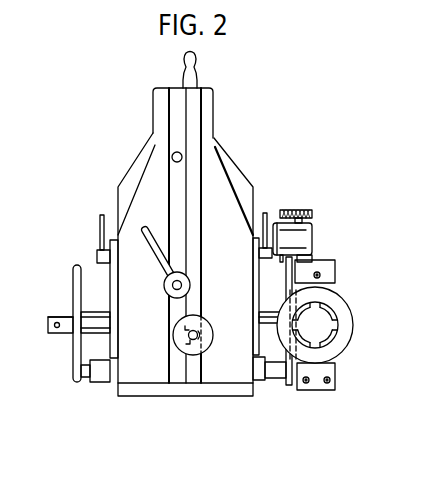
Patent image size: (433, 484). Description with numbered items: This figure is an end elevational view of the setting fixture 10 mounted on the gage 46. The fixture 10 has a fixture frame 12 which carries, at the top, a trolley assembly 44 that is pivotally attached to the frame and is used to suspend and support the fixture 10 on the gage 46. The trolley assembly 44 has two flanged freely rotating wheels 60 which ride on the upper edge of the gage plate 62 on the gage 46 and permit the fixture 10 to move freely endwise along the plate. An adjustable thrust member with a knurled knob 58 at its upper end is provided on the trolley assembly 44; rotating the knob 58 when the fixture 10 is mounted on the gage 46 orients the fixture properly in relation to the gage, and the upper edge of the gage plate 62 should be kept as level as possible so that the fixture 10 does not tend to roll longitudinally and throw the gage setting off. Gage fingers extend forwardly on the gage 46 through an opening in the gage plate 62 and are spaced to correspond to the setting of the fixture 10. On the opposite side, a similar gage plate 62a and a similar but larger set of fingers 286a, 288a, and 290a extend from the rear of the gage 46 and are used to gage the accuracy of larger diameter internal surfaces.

The setting fixture 10 is at (313, 393).
The fixture frame 12 is at (336, 373).
The trolley assembly 44 is at (317, 238).
The gage 46 is at (128, 168).
The knurled knob 58 is at (304, 210).
The flanged freely rotating wheels 60 is at (282, 258).
The gage plate 62 is at (286, 290).
The gage plate 62a is at (76, 272).
The gage finger 286a is at (48, 327).
The gage finger 288a is at (55, 333).
The gage finger 290a is at (63, 312).